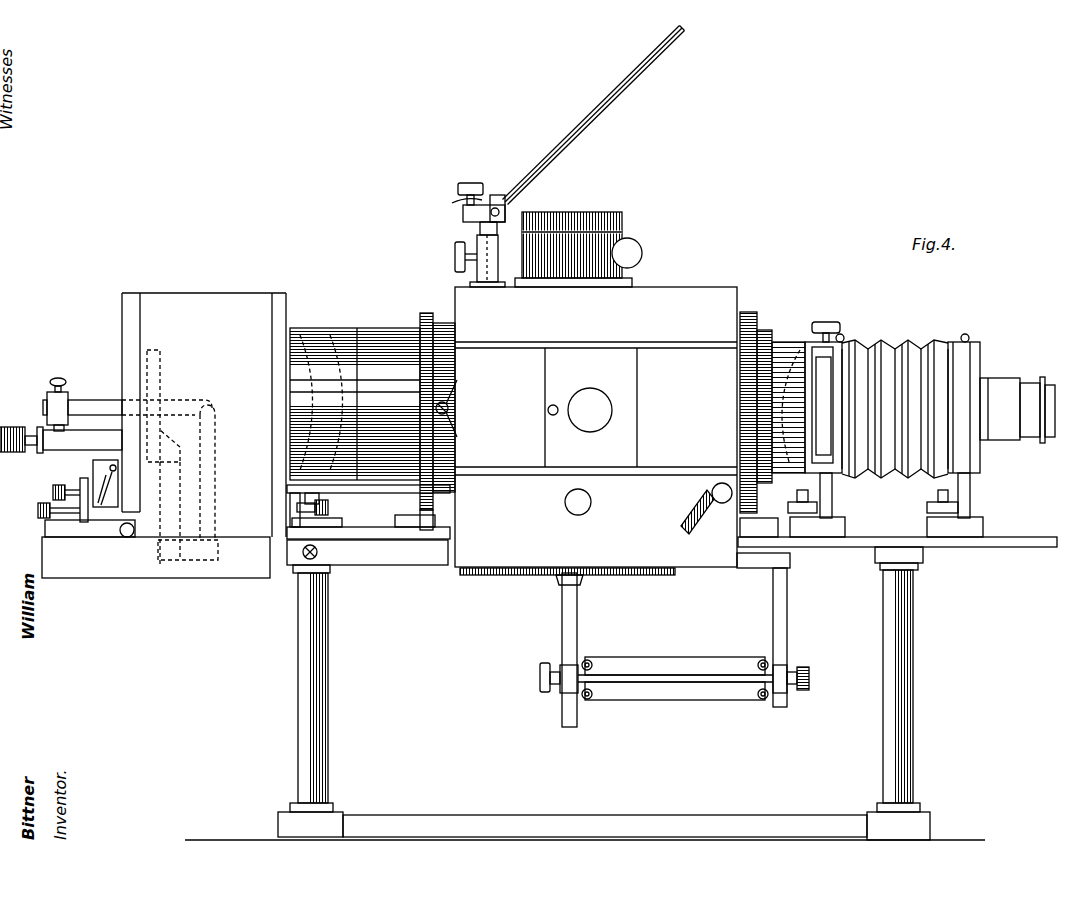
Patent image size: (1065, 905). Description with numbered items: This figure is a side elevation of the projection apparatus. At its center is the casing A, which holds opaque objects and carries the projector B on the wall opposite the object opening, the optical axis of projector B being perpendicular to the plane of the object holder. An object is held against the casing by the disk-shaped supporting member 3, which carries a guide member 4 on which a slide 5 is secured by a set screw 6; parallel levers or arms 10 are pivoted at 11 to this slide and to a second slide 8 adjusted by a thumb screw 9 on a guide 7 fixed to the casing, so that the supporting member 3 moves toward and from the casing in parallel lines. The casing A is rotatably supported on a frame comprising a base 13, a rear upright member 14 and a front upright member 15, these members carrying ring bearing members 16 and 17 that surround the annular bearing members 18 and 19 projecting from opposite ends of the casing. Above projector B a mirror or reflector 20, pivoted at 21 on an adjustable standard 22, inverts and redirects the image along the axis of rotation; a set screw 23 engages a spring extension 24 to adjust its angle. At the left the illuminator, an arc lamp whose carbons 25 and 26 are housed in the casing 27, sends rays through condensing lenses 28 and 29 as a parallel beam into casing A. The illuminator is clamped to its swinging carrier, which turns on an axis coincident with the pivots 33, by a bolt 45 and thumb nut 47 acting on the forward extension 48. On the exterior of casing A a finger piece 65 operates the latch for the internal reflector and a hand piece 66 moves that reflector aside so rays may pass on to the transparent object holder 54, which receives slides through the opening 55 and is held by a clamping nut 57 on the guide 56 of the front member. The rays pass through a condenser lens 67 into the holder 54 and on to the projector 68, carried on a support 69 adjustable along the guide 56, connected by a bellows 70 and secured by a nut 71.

The supporting member 3 is at (528, 577).
The guide member 4 is at (568, 628).
The slide 5 is at (600, 665).
The set screw 6 is at (545, 690).
The guide 7 is at (782, 611).
The slide 8 is at (787, 668).
The thumb screw 9 is at (809, 678).
The parallel levers or arms 10 is at (683, 658).
The pivots 11 is at (588, 660).
The base 13 is at (605, 818).
The rear upright member 14 is at (322, 692).
The front upright member 15 is at (907, 703).
The bearing member 16 is at (428, 315).
The bearing member 17 is at (749, 318).
The ring bearing member 18 is at (447, 322).
The ring bearing member 19 is at (764, 336).
The mirror or reflector 20 is at (613, 90).
The pivot 21 is at (495, 205).
The adjustable standard 22 is at (463, 214).
The set screw 23 is at (470, 184).
The spring extension 24 is at (456, 200).
The carbon 25 is at (88, 402).
The carbon 26 is at (212, 440).
The casing 27 is at (204, 429).
The lens 28 is at (306, 332).
The lens 29 is at (340, 332).
The pivots 33 is at (452, 406).
The bolt 45 is at (320, 498).
The thumb nut 47 is at (330, 509).
The forward extension 48 is at (338, 530).
The object holder 54 is at (846, 341).
The opening 55 is at (833, 385).
The guide 56 is at (877, 539).
The clamping nut 57 is at (830, 513).
The finger piece 65 is at (575, 510).
The hand piece 66 is at (689, 533).
The condenser lens 67 is at (797, 352).
The projector 68 is at (1012, 392).
The support 69 is at (972, 508).
The bellows 70 is at (914, 354).
The nut 71 is at (956, 512).
The casing A is at (596, 427).
The projector B is at (581, 249).